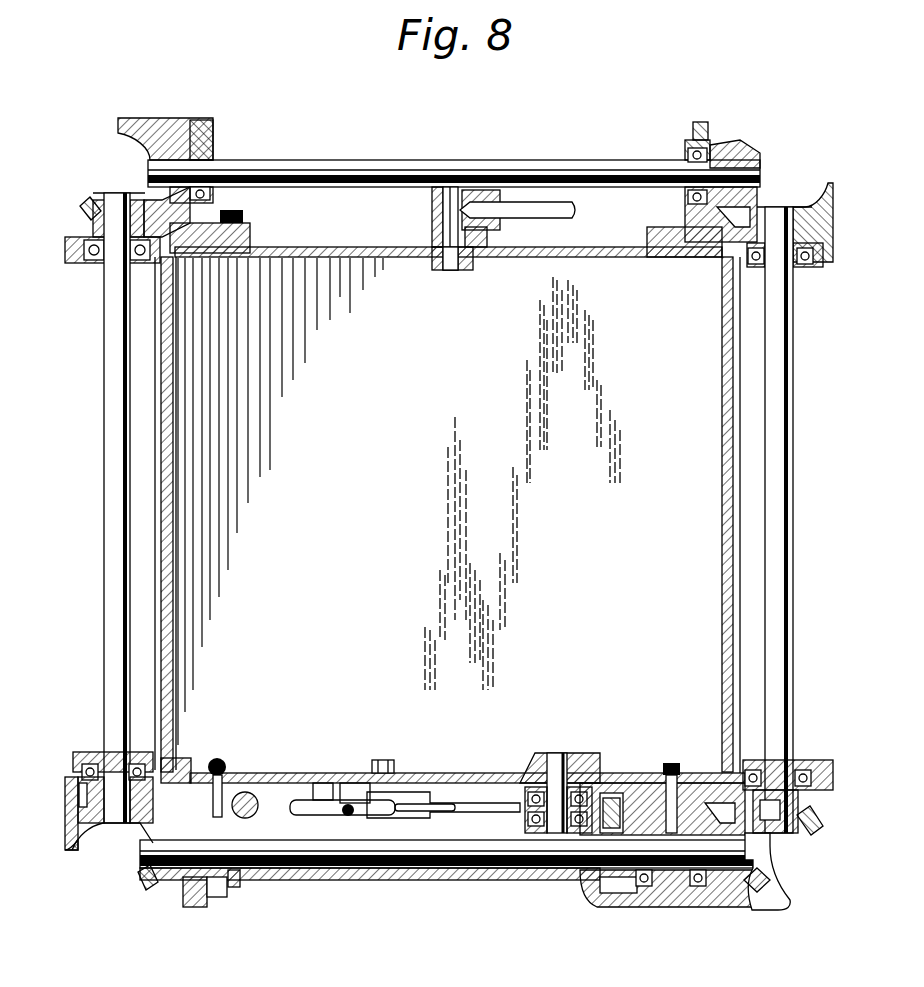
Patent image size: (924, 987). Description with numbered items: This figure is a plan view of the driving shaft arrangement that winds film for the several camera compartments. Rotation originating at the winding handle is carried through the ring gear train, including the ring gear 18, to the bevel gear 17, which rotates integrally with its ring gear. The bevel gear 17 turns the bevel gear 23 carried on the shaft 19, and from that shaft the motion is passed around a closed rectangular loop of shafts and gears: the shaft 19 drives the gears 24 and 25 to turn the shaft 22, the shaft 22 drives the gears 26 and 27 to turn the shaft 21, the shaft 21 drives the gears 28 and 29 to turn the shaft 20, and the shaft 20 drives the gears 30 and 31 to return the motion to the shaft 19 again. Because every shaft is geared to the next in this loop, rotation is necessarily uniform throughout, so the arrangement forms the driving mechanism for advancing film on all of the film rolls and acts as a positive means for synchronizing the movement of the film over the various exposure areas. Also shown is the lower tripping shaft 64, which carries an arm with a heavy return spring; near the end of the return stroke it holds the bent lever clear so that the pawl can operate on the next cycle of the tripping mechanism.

The bevel gear 17 is at (617, 832).
The ring gear 18 is at (600, 795).
The shaft 19 is at (440, 870).
The shaft 20 is at (103, 522).
The shaft 21 is at (398, 168).
The shaft 22 is at (795, 512).
The bevel gear 23 is at (612, 893).
The gear 24 is at (784, 871).
The gear 25 is at (812, 826).
The gear 26 is at (828, 190).
The gear 27 is at (758, 150).
The gear 28 is at (150, 128).
The gear 29 is at (92, 203).
The gear 30 is at (83, 818).
The gear 31 is at (140, 882).
The lower tripping shaft 64 is at (258, 810).